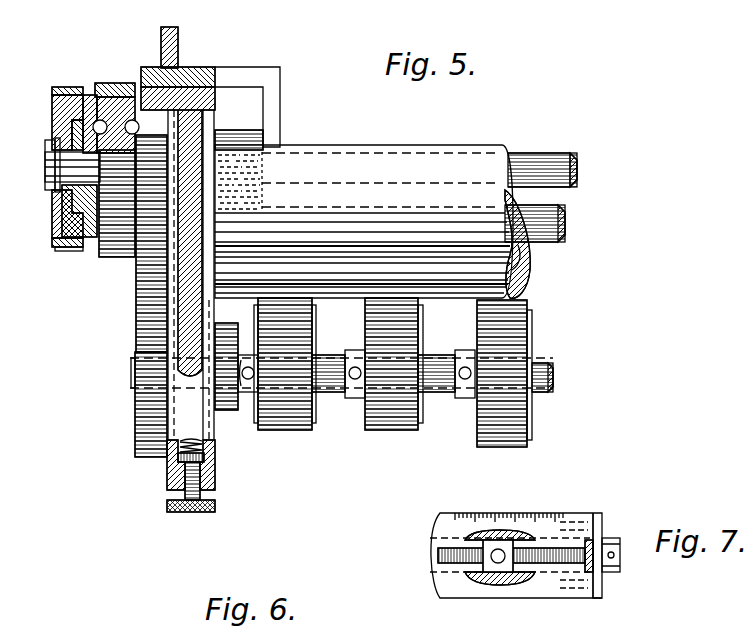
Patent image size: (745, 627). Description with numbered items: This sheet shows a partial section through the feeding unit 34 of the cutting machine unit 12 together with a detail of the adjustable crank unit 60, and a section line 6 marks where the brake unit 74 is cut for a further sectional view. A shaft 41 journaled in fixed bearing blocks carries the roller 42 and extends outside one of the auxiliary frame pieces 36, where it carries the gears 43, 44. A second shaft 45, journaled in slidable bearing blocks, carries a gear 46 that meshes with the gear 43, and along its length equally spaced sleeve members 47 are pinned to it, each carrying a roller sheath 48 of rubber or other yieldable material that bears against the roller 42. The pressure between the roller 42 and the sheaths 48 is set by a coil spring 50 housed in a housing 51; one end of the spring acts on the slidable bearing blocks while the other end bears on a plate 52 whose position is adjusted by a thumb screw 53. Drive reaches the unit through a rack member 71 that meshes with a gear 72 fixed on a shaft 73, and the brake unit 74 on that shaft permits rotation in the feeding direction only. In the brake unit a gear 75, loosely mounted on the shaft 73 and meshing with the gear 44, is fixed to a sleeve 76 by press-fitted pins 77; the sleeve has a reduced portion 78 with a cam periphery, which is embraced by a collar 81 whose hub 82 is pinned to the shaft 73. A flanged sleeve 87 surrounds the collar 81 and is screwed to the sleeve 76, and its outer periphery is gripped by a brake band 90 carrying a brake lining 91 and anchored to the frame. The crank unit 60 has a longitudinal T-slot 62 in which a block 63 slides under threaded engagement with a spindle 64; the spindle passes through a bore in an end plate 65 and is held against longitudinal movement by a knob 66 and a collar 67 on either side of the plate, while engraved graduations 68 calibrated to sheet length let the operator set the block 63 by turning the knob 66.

In FIG. 5, the section line 6- 6 is at (77, 56).
In FIG. 5, the cutting machine unit 12 is at (178, 40).
In FIG. 5, the feeding unit 34 is at (409, 221).
In FIG. 5, the auxiliary frame pieces 36 is at (178, 320).
In FIG. 5, the shaft 41 is at (565, 228).
In FIG. 5, the roller 42 is at (528, 278).
In FIG. 5, the gear 43 is at (145, 283).
In FIG. 5, the gear 44 is at (119, 253).
In FIG. 5, the shaft 45 is at (553, 378).
In FIG. 5, the gear 46 is at (136, 420).
In FIG. 5, the sleeve members 47 is at (478, 321).
In FIG. 5, the roller sheaths 48 is at (482, 415).
In FIG. 5, the coil spring 50 is at (204, 457).
In FIG. 5, the housing 51 is at (215, 480).
In FIG. 5, the plate 52 is at (187, 465).
In FIG. 5, the thumb screw 53 is at (189, 512).
In FIG. 7, the adjustable crank unit 60 is at (516, 564).
In FIG. 7, the T-slot 62 is at (473, 582).
In FIG. 7, the block 63 is at (500, 572).
In FIG. 7, the spindle 64 is at (440, 555).
In FIG. 7, the plate 65 is at (597, 598).
In FIG. 7, the knob 66 is at (621, 558).
In FIG. 7, the collar 67 is at (592, 545).
In FIG. 7, the engraved graduations 68 is at (503, 530).
In FIG. 5, the rack member 71 is at (263, 140).
In FIG. 5, the gear 72 is at (264, 177).
In FIG. 5, the shaft 73 is at (535, 160).
In FIG. 5, the brake unit 74 is at (52, 110).
In FIG. 5, the gear 75 is at (115, 83).
In FIG. 5, the sleeve 76 is at (88, 95).
In FIG. 5, the press-fitted pins 77 is at (120, 103).
In FIG. 5, the reduced portion 78 is at (64, 200).
In FIG. 5, the collar 81 is at (75, 133).
In FIG. 5, the hub 82 is at (47, 182).
In FIG. 5, the flanged sleeve 87 is at (52, 240).
In FIG. 5, the brake band 90 is at (70, 87).
In FIG. 5, the brake lining 91 is at (60, 248).